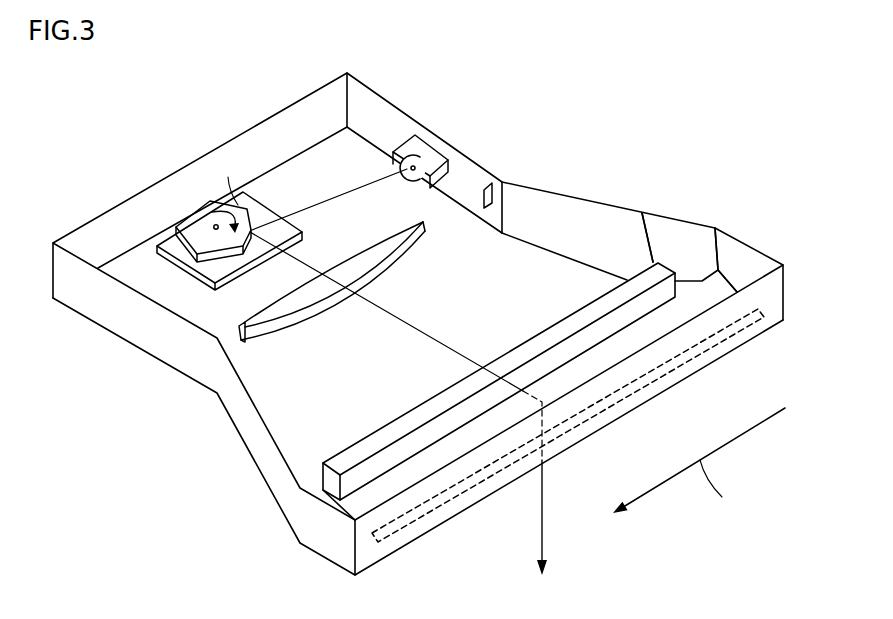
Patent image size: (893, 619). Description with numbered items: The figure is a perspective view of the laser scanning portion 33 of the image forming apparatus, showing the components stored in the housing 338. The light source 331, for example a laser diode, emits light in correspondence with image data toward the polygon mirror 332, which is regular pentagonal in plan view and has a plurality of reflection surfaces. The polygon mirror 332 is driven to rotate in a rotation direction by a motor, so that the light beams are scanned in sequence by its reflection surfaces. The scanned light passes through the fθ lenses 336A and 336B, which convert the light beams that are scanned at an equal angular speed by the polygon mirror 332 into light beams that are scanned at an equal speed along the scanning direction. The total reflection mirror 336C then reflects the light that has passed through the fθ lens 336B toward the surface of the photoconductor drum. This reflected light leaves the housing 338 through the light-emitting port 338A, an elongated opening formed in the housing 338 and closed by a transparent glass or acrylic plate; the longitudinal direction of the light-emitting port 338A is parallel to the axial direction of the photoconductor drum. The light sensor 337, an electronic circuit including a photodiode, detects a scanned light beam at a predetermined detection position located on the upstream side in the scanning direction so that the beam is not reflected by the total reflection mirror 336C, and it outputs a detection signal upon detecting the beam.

The laser scanning portion 33 is at (503, 87).
The light source 331 is at (426, 143).
The polygon mirror 332 is at (198, 228).
The fθ lens 336A is at (238, 328).
The fθ lens 336B is at (655, 261).
The total reflection mirror 336C is at (722, 268).
The light sensor 337 is at (489, 188).
The housing 338 is at (265, 119).
The light-emitting port 338A is at (448, 494).